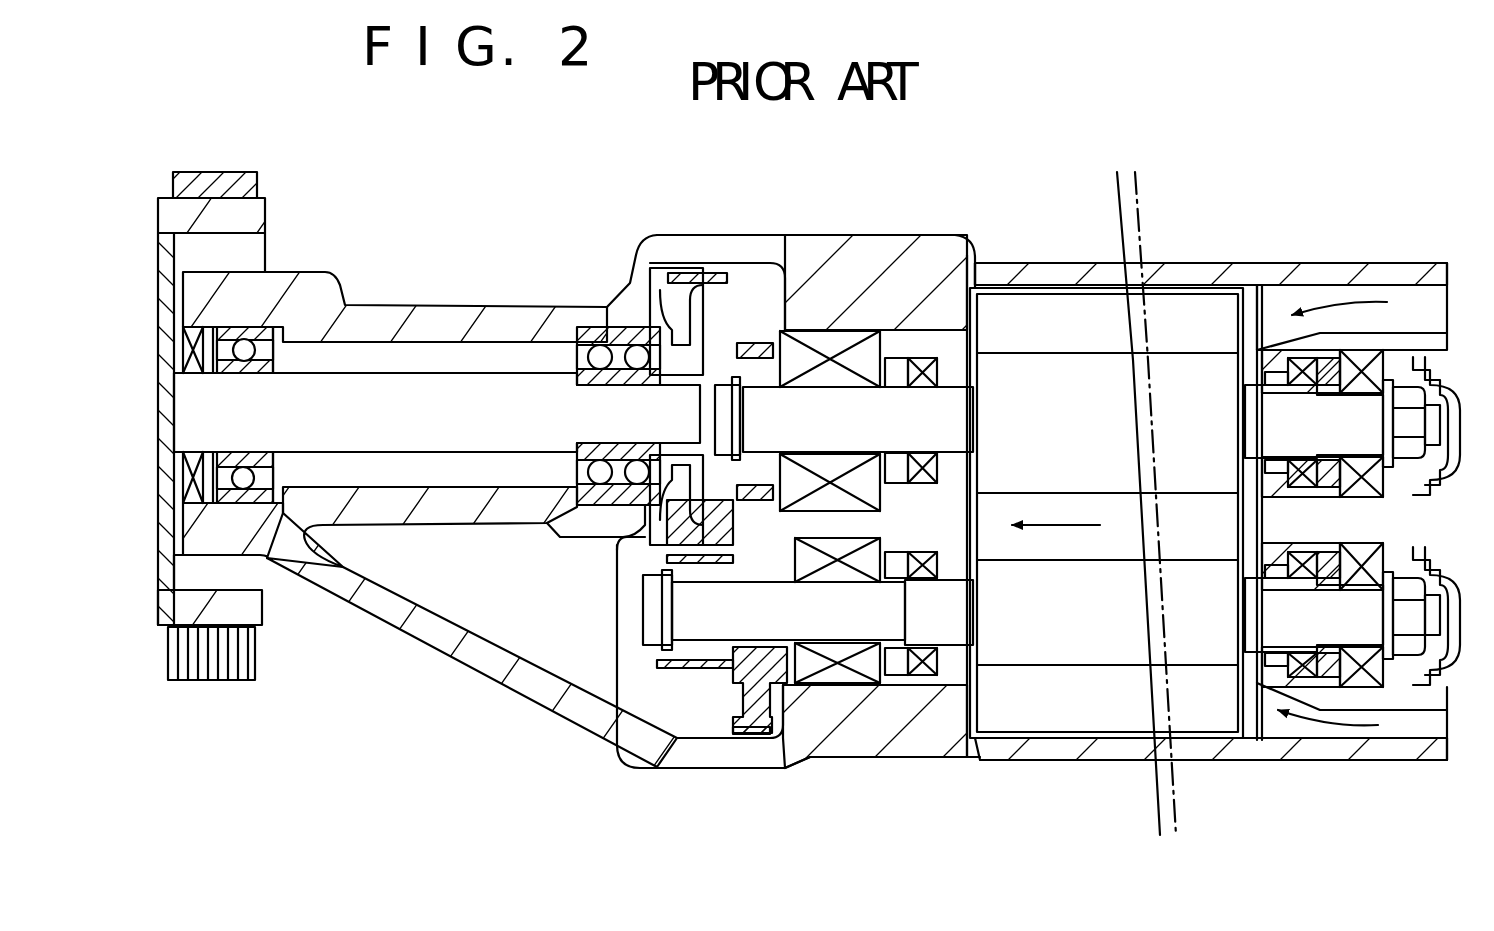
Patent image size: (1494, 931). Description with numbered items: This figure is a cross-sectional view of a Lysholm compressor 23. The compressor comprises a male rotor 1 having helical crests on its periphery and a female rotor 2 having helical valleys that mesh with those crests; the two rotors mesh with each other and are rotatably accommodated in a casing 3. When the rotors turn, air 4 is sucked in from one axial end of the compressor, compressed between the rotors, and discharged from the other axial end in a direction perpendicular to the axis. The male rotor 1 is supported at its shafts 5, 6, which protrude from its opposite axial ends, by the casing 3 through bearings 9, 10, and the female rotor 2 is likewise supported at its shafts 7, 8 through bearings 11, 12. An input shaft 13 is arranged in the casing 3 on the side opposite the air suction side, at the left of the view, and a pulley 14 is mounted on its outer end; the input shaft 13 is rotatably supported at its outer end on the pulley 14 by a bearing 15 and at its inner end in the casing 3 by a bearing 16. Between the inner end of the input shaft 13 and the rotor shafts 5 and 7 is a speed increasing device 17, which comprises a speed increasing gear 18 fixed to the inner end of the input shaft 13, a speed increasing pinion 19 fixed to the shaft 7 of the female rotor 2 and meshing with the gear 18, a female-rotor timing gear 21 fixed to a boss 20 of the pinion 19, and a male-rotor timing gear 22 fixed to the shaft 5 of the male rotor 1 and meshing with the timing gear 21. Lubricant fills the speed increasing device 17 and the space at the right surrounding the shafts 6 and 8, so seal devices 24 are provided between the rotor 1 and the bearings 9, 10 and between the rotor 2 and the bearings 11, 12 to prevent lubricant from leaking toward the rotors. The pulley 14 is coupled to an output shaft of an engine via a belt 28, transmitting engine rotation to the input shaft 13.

The male rotor 1 is at (1080, 320).
The female rotor 2 is at (1090, 655).
The casing 3 is at (1200, 268).
The air 4 is at (1077, 540).
The shaft 5 is at (893, 407).
The shaft 6 is at (1395, 368).
The shaft 7 is at (892, 620).
The shaft 8 is at (1420, 600).
The bearing 9 is at (865, 328).
The bearing 10 is at (1360, 360).
The bearing 11 is at (868, 690).
The bearing 12 is at (1355, 640).
The input shaft 13 is at (440, 415).
The pulley 14 is at (255, 655).
The bearing 15 is at (310, 280).
The bearing 16 is at (605, 330).
The speed increasing device 17 is at (743, 316).
The speed increasing gear 18 is at (692, 270).
The speed increasing pinion 19 is at (663, 673).
The boss 20 is at (690, 650).
The female-rotor timing gear 21 is at (747, 735).
The male-rotor timing gear 22 is at (760, 342).
The Lysholm compressor 23 is at (1156, 188).
The seal devices 24 is at (906, 548).
The belt 28 is at (207, 172).